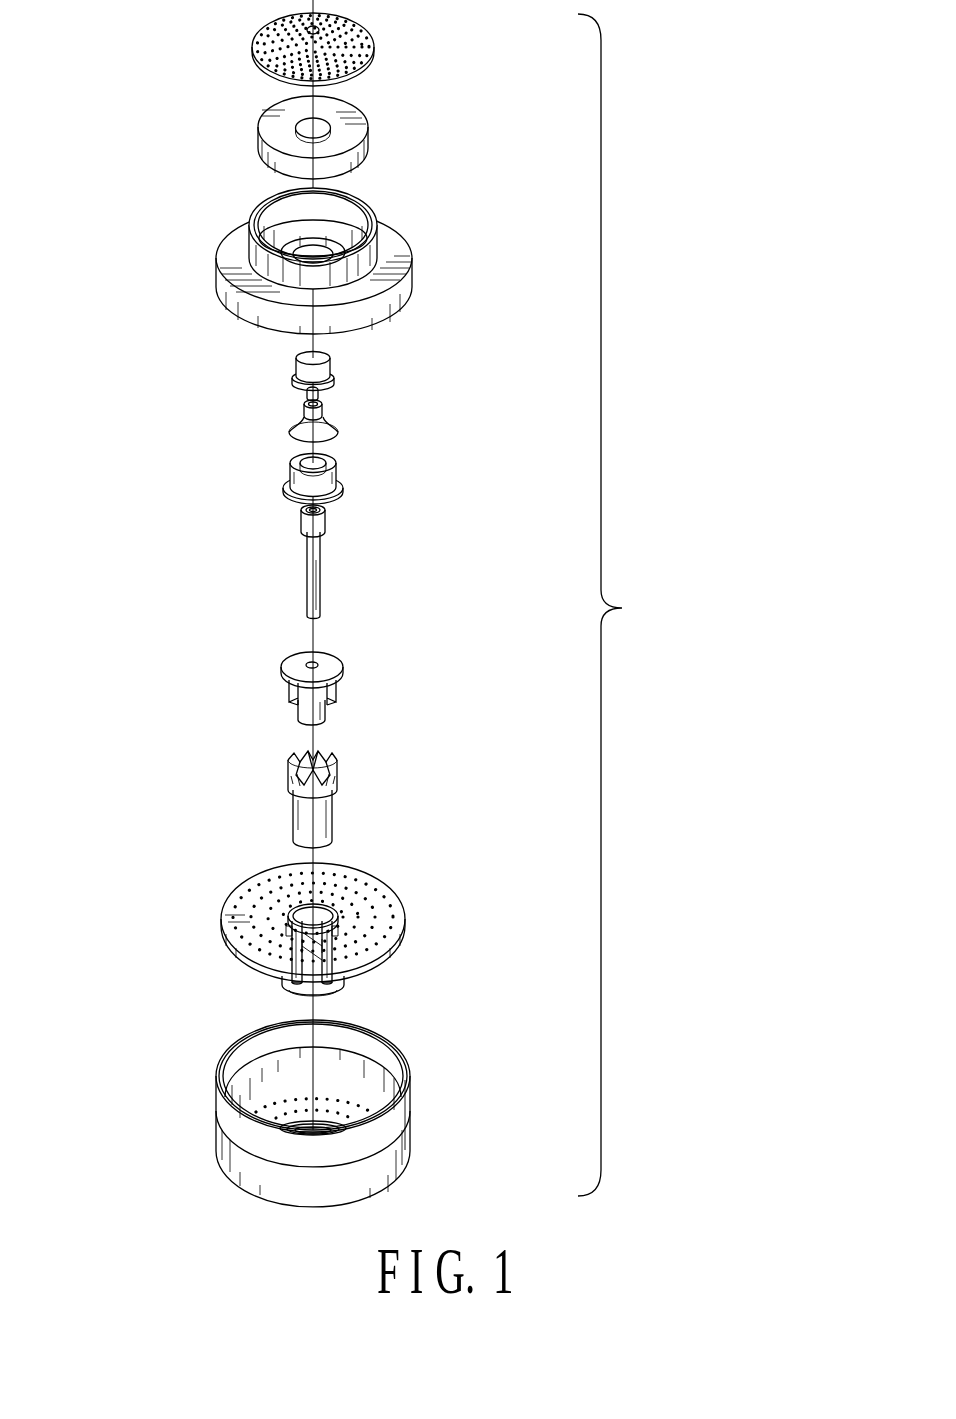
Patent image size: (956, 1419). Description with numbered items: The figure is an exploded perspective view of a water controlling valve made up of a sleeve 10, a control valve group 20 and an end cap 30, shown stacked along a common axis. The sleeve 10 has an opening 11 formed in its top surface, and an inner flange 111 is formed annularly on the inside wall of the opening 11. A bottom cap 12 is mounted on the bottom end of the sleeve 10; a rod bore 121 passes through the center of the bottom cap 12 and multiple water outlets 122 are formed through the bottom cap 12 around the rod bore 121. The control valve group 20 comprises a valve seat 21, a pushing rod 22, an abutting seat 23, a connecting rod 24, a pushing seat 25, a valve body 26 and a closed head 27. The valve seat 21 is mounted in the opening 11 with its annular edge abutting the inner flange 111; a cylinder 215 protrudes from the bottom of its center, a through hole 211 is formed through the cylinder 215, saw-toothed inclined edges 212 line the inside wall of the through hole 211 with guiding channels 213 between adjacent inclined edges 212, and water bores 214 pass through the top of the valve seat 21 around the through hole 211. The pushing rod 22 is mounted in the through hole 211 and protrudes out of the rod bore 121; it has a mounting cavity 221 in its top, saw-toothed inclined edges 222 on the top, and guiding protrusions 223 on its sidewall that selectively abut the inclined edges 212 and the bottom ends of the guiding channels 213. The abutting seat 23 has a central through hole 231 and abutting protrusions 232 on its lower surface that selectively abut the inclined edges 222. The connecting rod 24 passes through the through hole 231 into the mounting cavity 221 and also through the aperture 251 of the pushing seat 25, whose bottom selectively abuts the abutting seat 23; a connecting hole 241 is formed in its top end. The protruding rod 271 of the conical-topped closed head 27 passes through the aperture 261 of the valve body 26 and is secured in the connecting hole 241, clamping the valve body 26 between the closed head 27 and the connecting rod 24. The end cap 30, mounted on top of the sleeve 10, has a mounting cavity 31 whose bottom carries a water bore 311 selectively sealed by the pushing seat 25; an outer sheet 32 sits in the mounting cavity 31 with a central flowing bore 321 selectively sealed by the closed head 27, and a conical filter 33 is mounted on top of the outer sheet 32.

The sleeve 10 is at (309, 1127).
The opening 11 is at (377, 1052).
The inner flange 111 is at (230, 1082).
The bottom cap 12 is at (359, 1166).
The rod bore 121 is at (320, 1135).
The water outlets 122 is at (235, 1170).
The control valve group 20 is at (482, 680).
The valve seat 21 is at (333, 935).
The through hole 211 is at (337, 910).
The inclined edges 212 is at (313, 923).
The guiding channels 213 is at (343, 955).
The water bores 214 is at (370, 942).
The cylinder 215 is at (283, 985).
The pushing rod 22 is at (316, 788).
The mounting cavity 221 is at (333, 758).
The inclined edges 222 is at (307, 753).
The guiding protrusions 223 is at (292, 780).
The abutting seat 23 is at (347, 679).
The central through hole 231 is at (318, 662).
The abutting protrusions 232 is at (337, 697).
The connecting rod 24 is at (312, 561).
The connecting hole 241 is at (300, 516).
The pushing seat 25 is at (312, 472).
The aperture 251 is at (300, 465).
The valve body 26 is at (321, 415).
The aperture 261 is at (306, 407).
The closed head 27 is at (329, 369).
The protruding rod 271 is at (318, 394).
The end cap 30 is at (336, 261).
The mounting cavity 31 is at (317, 238).
The water bore 311 is at (290, 250).
The outer sheet 32 is at (309, 137).
The flowing bore 321 is at (298, 128).
The conical filter 33 is at (366, 31).